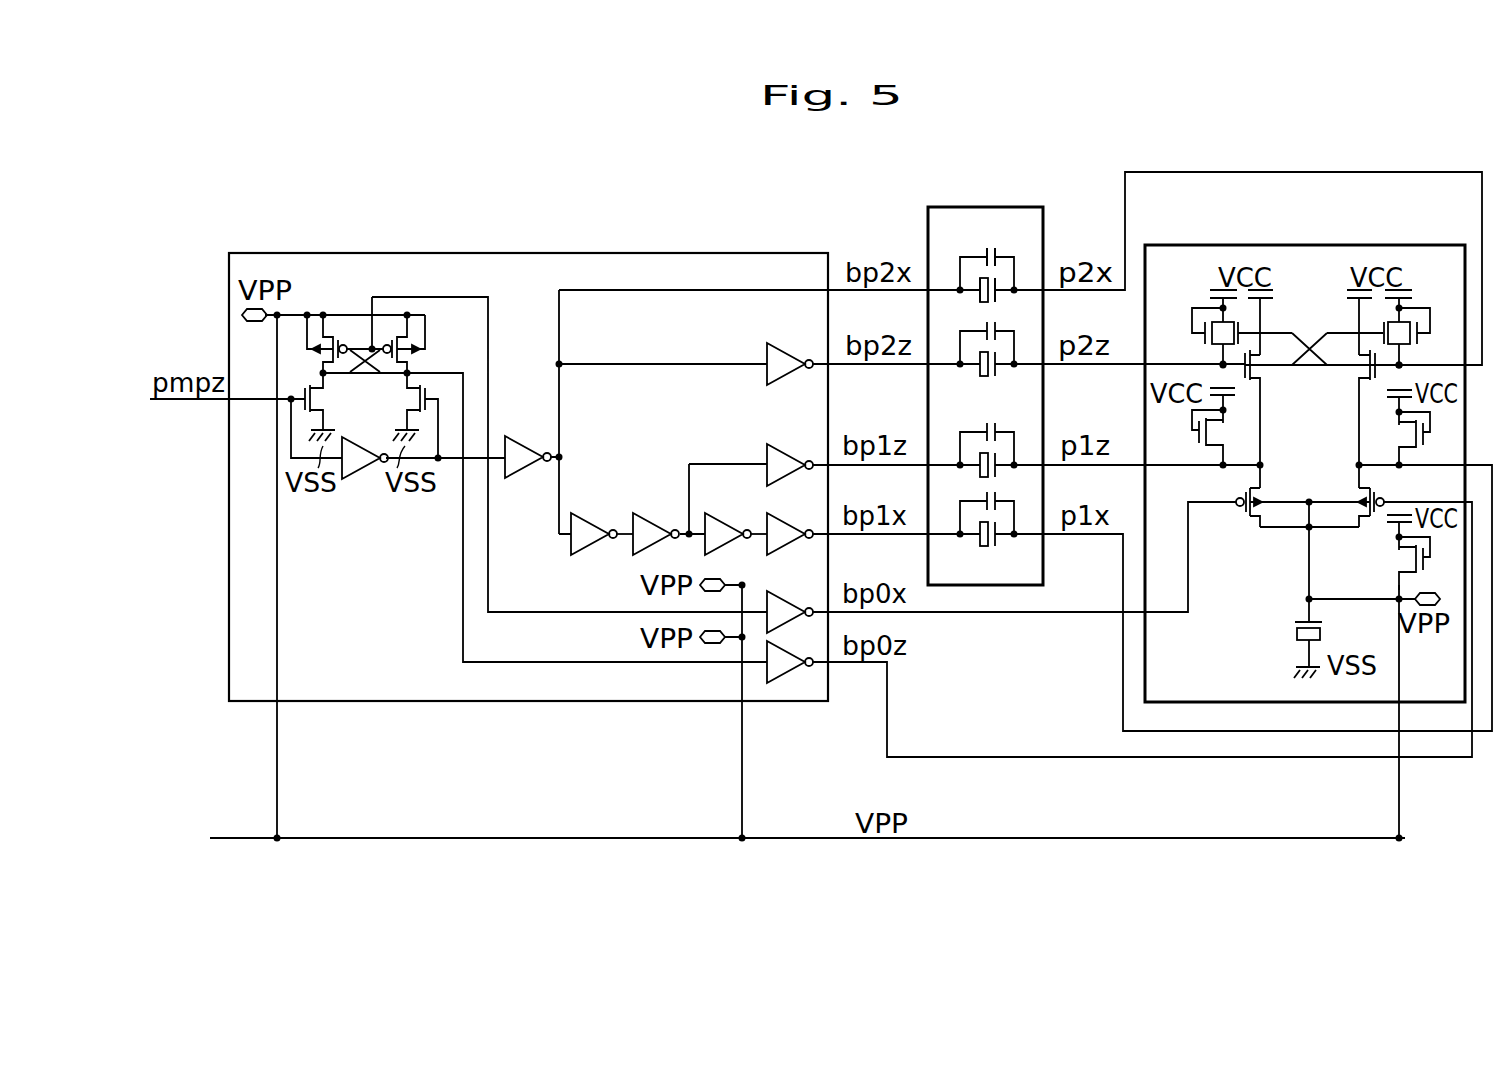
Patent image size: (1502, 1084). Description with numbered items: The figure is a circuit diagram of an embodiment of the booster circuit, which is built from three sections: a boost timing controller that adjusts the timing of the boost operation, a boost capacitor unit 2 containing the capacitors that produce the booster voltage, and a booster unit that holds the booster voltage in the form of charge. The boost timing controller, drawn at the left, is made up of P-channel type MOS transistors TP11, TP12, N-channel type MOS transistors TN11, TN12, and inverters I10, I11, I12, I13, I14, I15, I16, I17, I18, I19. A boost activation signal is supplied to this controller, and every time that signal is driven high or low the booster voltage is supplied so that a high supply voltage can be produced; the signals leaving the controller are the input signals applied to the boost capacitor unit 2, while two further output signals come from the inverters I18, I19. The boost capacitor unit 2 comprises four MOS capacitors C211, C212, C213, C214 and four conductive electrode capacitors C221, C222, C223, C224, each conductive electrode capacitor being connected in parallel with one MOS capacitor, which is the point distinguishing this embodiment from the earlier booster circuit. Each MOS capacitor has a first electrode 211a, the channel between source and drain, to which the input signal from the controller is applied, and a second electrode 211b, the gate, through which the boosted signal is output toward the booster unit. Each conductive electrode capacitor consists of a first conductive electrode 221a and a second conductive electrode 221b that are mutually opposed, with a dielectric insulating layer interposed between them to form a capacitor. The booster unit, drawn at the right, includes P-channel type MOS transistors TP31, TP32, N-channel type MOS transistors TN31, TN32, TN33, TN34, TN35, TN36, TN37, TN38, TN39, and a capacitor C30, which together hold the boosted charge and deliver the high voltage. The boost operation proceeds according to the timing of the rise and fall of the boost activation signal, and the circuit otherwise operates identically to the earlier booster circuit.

The boost capacitor unit 2 is at (928, 235).
The P-channel type MOS transistor TP11 is at (345, 340).
The P-channel type MOS transistor TP12 is at (432, 344).
The N-channel type MOS transistor TN11 is at (317, 394).
The N-channel type MOS transistor TN12 is at (406, 400).
The inverter I10 is at (357, 478).
The inverter I11 is at (515, 477).
The inverter I12 is at (765, 355).
The inverter I13 is at (583, 512).
The inverter I14 is at (643, 512).
The inverter I15 is at (776, 448).
The inverter I16 is at (719, 512).
The inverter I17 is at (786, 515).
The inverter I18 is at (786, 595).
The inverter I19 is at (780, 672).
The MOS capacitor C211 is at (986, 302).
The MOS capacitor C212 is at (985, 377).
The MOS capacitor C213 is at (997, 478).
The MOS capacitor C214 is at (985, 546).
The conductive electrode capacitor C221 is at (993, 245).
The conductive electrode capacitor C222 is at (1000, 322).
The conductive electrode capacitor C223 is at (985, 424).
The conductive electrode capacitor C224 is at (985, 495).
The first electrode 211a is at (975, 286).
The second electrode 211b is at (1000, 286).
The first conductive electrode 221a is at (975, 248).
The second conductive electrode 221b is at (1000, 249).
The N-channel type MOS transistor TN31 is at (1205, 330).
The N-channel type MOS transistor TN32 is at (1240, 326).
The N-channel type MOS transistor TN33 is at (1372, 342).
The N-channel type MOS transistor TN34 is at (1418, 340).
The N-channel type MOS transistor TN35 is at (1252, 360).
The N-channel type MOS transistor TN36 is at (1365, 405).
The N-channel type MOS transistor TN37 is at (1212, 447).
The N-channel type MOS transistor TN38 is at (1410, 440).
The N-channel type MOS transistor TN39 is at (1413, 563).
The P-channel type MOS transistor TP31 is at (1243, 510).
The P-channel type MOS transistor TP32 is at (1372, 516).
The capacitor C30 is at (1295, 634).